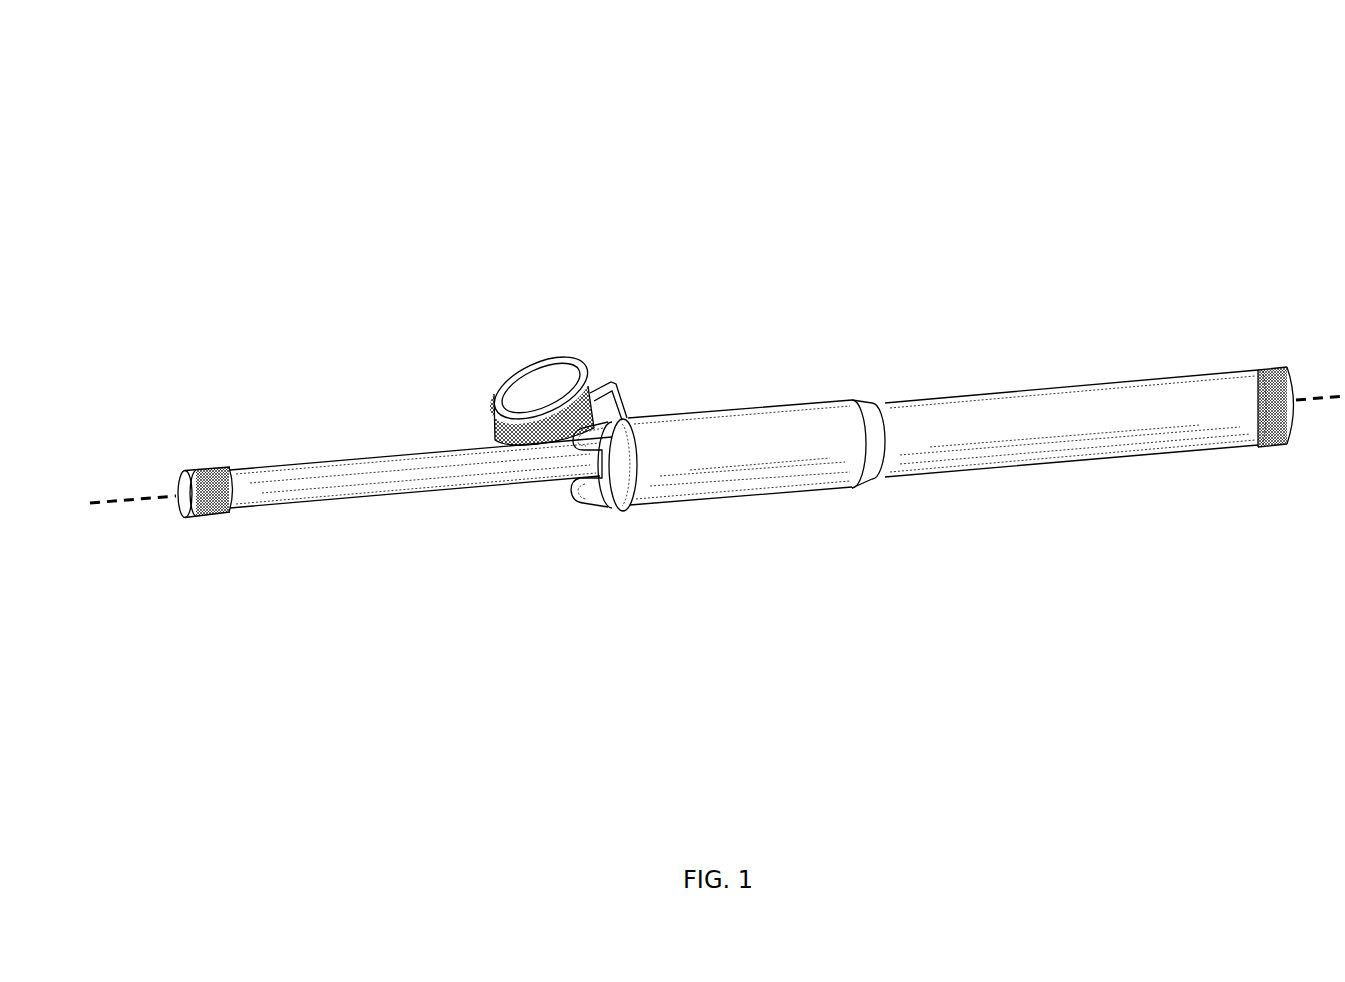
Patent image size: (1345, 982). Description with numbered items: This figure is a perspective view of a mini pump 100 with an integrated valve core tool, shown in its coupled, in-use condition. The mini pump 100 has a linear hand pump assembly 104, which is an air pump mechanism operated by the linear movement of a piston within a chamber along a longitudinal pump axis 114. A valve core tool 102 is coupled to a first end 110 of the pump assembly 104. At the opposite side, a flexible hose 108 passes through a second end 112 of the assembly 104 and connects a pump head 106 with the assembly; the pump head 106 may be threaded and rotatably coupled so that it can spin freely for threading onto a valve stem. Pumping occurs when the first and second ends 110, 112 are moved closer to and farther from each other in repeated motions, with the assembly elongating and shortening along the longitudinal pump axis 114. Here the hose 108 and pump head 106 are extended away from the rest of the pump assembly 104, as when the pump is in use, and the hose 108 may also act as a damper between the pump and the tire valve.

The mini pump 100 is at (1162, 134).
The valve core tool 102 is at (1271, 462).
The linear hand pump assembly 104 is at (910, 538).
The pump head 106 is at (210, 518).
The flexible hose 108 is at (341, 462).
The first end 110 is at (1246, 369).
The second end 112 is at (642, 506).
The longitudinal pump axis 114 is at (125, 476).